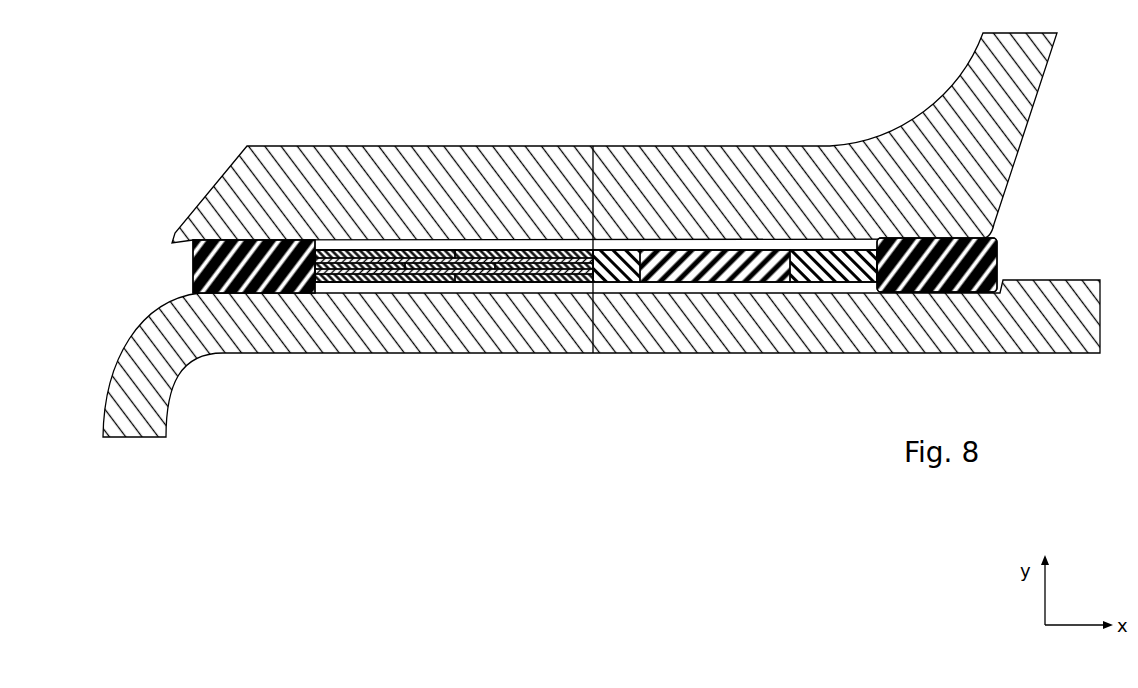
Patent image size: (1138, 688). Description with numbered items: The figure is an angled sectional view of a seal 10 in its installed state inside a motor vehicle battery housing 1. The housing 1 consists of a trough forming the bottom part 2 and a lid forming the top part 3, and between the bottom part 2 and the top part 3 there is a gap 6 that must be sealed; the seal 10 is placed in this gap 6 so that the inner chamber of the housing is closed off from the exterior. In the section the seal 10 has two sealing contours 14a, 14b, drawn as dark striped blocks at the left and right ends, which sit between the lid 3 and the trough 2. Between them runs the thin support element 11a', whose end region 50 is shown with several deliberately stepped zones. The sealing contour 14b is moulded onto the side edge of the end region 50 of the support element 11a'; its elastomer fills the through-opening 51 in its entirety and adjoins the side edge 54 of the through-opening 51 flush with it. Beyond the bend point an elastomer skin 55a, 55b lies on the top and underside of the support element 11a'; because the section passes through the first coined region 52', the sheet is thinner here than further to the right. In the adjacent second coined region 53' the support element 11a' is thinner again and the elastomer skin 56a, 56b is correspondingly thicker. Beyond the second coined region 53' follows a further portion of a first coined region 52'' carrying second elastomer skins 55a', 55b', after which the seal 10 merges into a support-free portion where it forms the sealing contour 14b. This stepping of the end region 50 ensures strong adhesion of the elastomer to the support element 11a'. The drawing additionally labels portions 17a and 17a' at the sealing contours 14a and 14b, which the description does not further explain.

The housing 1 is at (152, 162).
The bottom part 2 is at (132, 382).
The top part 3 is at (660, 148).
The gap 6 is at (168, 271).
The seal 10 is at (437, 283).
The support element 11a' is at (650, 327).
The sealing contour 14a is at (967, 290).
The sealing contour 14b is at (265, 294).
The adhesive layer 17a is at (937, 316).
The adhesive layer 17a' is at (252, 314).
The end region 50 is at (841, 250).
The through-opening 51 is at (768, 282).
The first coined region 52' is at (544, 327).
The further portion of first coined region 52'' is at (360, 327).
The second coined region 53' is at (440, 326).
The side edge 54 is at (793, 282).
The elastomer skin 55a is at (524, 185).
The second elastomer skin 55a' is at (385, 180).
The elastomer skin 55b is at (529, 346).
The second elastomer skin 55b' is at (375, 351).
The elastomer skin 56a is at (458, 256).
The elastomer skin 56b is at (470, 283).